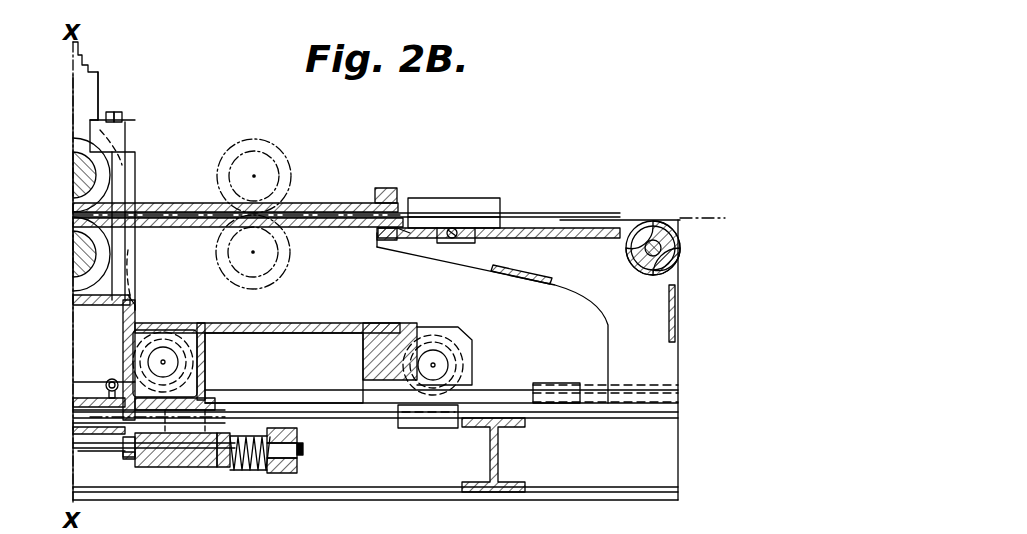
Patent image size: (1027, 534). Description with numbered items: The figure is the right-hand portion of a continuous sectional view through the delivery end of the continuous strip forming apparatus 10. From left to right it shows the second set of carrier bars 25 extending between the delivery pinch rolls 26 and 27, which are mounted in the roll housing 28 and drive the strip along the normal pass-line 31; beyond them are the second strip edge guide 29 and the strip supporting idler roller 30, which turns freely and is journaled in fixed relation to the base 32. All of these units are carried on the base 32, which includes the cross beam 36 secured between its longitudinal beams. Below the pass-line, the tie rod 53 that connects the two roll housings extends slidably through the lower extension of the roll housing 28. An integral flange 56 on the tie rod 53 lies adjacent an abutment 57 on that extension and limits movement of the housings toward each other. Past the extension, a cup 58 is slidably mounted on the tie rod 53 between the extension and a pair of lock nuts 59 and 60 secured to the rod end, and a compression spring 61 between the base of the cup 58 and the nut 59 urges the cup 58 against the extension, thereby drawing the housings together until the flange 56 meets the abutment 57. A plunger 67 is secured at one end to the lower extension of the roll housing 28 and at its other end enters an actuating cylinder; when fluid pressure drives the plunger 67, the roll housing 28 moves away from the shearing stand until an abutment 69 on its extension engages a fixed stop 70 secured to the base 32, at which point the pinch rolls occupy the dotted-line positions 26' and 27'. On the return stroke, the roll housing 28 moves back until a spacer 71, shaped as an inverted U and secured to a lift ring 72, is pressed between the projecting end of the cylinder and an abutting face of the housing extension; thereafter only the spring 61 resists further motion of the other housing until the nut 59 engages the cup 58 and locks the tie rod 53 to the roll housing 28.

The continuous strip forming apparatus 10 is at (200, 132).
The second set of carrier bars 25 is at (305, 206).
The delivery pinch roll 26 is at (123, 175).
The dotted-line position of pinch roll 26' is at (274, 172).
The delivery pinch roll 27 is at (124, 254).
The dotted-line position of pinch roll 27' is at (271, 257).
The roll housing 28 is at (130, 281).
The second strip edge guide 29 is at (462, 208).
The strip supporting idler roller 30 is at (665, 222).
The normal pass-line 31 is at (584, 218).
The base 32 is at (483, 390).
The cross beam 36 is at (498, 456).
The tie rod 53 is at (90, 450).
The integral flange 56 is at (128, 458).
The abutment 57 is at (128, 462).
The cup 58 is at (185, 468).
The lock nut 59 is at (288, 466).
The lock nut 60 is at (290, 438).
The compression spring 61 is at (254, 472).
The plunger 67 is at (78, 415).
The abutment 69 is at (225, 400).
The fixed stop 70 is at (400, 424).
The spacer 71 is at (165, 393).
The lift ring 72 is at (110, 380).